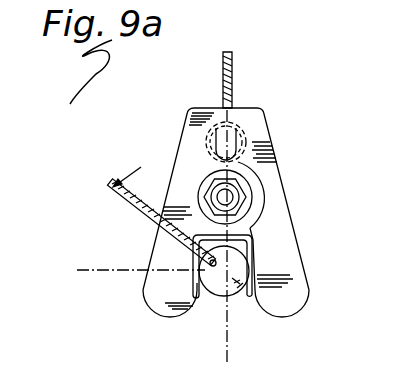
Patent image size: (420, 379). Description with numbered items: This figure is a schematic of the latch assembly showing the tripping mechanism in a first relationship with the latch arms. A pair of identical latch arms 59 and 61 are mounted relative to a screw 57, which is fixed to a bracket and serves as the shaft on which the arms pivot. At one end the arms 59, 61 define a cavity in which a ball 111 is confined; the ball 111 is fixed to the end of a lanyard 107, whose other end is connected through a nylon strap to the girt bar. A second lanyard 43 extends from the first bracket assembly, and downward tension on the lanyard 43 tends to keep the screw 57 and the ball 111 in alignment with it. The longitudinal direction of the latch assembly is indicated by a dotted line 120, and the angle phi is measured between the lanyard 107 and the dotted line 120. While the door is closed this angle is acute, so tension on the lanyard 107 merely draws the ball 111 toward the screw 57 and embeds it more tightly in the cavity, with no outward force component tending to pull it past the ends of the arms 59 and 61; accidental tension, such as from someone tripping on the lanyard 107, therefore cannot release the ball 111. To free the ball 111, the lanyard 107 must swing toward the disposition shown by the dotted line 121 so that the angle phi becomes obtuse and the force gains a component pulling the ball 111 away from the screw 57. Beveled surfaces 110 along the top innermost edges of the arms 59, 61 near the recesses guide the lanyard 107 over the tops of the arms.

The lanyard 43 is at (232, 80).
The screw 57 is at (232, 196).
The latch arm 59 is at (262, 142).
The latch arm 61 is at (189, 126).
The lanyard 107 is at (132, 203).
The beveled surfaces 110 is at (198, 283).
The ball 111 is at (235, 297).
The dotted line 120 is at (223, 338).
The dotted line 121 is at (120, 274).